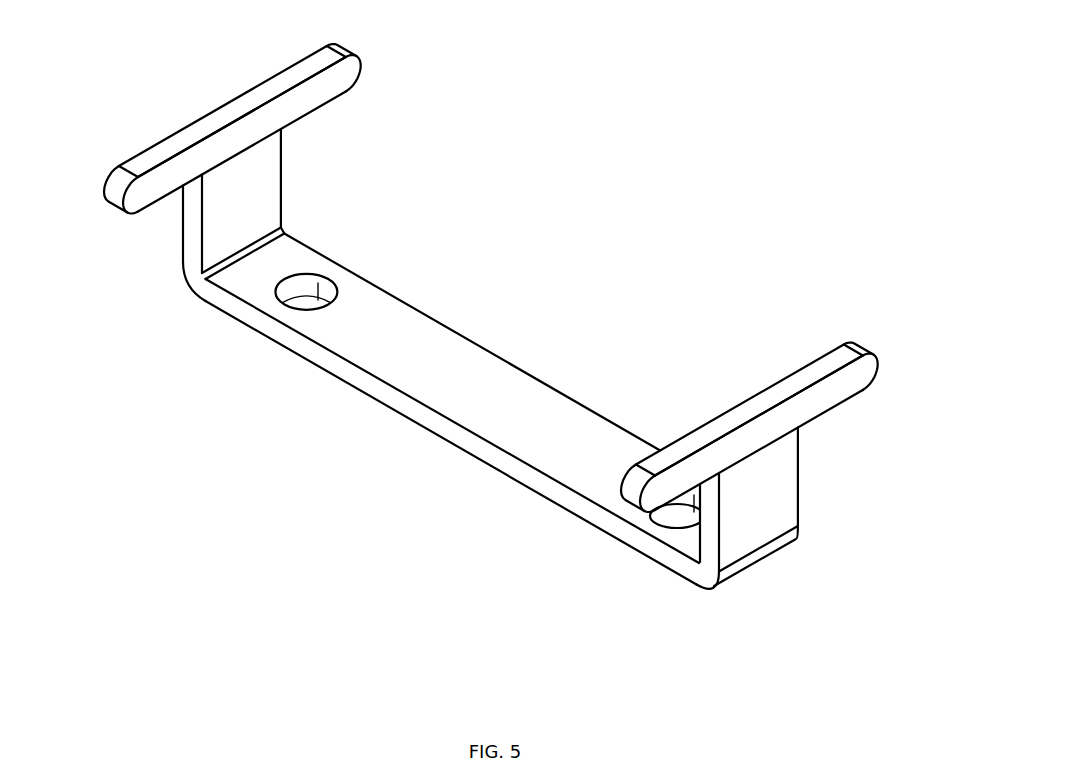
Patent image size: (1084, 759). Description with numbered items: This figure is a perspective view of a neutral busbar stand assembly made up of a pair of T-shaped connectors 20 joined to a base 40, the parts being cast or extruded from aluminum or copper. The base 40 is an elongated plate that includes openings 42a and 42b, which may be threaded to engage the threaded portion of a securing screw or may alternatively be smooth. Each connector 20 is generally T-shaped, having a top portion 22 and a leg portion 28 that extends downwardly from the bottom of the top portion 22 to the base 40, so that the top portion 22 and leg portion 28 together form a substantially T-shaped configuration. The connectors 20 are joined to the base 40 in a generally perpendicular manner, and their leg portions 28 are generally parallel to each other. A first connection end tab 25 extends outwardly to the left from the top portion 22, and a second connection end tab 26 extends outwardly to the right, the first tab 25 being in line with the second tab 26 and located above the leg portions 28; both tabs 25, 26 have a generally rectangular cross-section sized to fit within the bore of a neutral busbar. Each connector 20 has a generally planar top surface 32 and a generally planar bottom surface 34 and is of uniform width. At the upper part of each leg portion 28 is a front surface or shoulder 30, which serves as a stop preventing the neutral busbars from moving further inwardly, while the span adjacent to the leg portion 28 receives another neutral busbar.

The T-shaped connector 20 is at (502, 326).
The top portion 22 is at (502, 294).
The first connection end tab 25 is at (115, 183).
The second connection end tab 26 is at (342, 77).
The leg portion 28 is at (494, 382).
The front surface or shoulder 30 is at (187, 197).
The top surface 32 is at (168, 148).
The bottom surface 34 is at (328, 102).
The base 40 is at (483, 437).
The opening 42a is at (303, 289).
The opening 42b is at (650, 514).